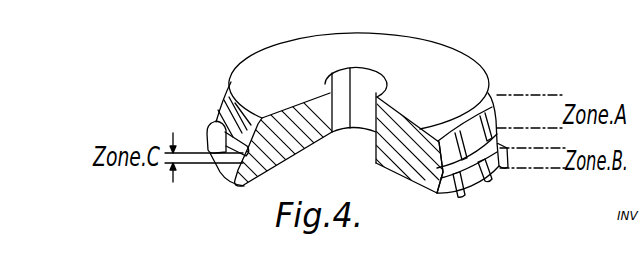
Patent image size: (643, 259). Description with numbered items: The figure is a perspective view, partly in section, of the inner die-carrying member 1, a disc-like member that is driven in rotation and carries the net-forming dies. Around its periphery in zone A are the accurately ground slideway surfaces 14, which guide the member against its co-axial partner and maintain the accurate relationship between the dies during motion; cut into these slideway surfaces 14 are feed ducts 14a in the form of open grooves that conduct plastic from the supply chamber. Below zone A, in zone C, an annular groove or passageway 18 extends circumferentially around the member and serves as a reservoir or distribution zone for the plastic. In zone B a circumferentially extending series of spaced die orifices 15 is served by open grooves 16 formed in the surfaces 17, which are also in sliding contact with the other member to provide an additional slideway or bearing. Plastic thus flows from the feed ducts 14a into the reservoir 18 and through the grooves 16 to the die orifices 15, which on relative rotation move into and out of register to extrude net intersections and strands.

The inner die-carrying member 1 is at (420, 55).
The slideway surfaces 14 is at (493, 120).
The feed ducts 14a is at (470, 112).
The die orifices 15 is at (490, 192).
The open grooves 16 is at (463, 200).
The surfaces of zone B 17 is at (447, 187).
The annular groove or passageway 18 is at (436, 170).